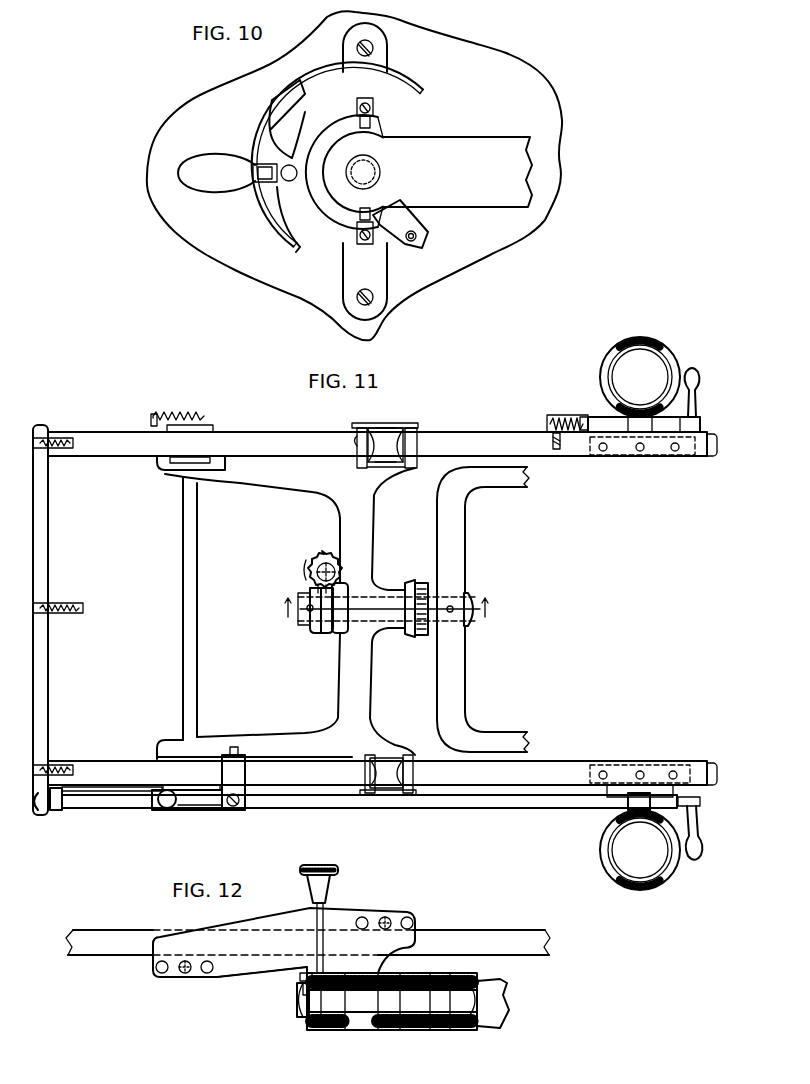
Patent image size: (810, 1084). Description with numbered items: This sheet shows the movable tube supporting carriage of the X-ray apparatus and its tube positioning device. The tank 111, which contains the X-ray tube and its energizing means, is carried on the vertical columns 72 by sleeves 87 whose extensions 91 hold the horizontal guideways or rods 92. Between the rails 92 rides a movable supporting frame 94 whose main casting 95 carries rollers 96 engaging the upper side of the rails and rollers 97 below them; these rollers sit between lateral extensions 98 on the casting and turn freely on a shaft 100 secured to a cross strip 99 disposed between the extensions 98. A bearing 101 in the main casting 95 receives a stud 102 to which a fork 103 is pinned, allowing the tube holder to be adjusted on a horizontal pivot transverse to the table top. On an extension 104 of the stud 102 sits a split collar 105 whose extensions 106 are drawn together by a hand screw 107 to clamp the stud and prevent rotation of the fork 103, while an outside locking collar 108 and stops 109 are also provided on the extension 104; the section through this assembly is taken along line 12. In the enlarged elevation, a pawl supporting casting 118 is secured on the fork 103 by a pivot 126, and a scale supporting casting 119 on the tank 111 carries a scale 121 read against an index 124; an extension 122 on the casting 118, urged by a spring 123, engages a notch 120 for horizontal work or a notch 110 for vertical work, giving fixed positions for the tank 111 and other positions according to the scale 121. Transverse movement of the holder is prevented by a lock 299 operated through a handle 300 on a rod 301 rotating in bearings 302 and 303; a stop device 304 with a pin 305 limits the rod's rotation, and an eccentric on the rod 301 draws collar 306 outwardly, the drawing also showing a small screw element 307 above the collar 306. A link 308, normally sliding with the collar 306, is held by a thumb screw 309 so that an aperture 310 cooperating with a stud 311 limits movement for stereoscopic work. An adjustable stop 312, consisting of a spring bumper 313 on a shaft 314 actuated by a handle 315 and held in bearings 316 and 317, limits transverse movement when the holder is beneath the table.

In FIG. 11, the section line 12 is at (389, 609).
In FIG. 11, the vertical columns 72 is at (660, 352).
In FIG. 11, the sleeves 87 is at (613, 345).
In FIG. 11, the extensions 91 is at (682, 449).
In FIG. 11, the guideways or rods 92 is at (238, 440).
In FIG. 12, the guideways or rods 92 is at (512, 943).
In FIG. 11, the movable supporting frame 94 is at (183, 544).
In FIG. 12, the movable supporting frame 94 is at (348, 915).
In FIG. 11, the main casting 95 is at (377, 542).
In FIG. 12, the main casting 95 is at (237, 973).
In FIG. 11, the rollers 96 is at (380, 433).
In FIG. 12, the rollers 96 is at (385, 910).
In FIG. 11, the rollers 97 is at (168, 466).
In FIG. 12, the rollers 97 is at (183, 978).
In FIG. 11, the lateral extensions 98 is at (153, 430).
In FIG. 11, the cross strip 99 is at (197, 426).
In FIG. 11, the shaft 100 is at (183, 461).
In FIG. 11, the bearing 101 is at (342, 630).
In FIG. 11, the stud 102 is at (390, 620).
In FIG. 12, the stud 102 is at (427, 1005).
In FIG. 10, the fork 103 is at (477, 150).
In FIG. 11, the fork 103 is at (458, 672).
In FIG. 12, the fork 103 is at (489, 1003).
In FIG. 11, the extension 104 is at (304, 609).
In FIG. 12, the extension 104 is at (300, 1007).
In FIG. 11, the split collar 105 is at (320, 630).
In FIG. 12, the split collar 105 is at (317, 1028).
In FIG. 11, the extensions 106 is at (322, 552).
In FIG. 11, the hand screw 107 is at (313, 558).
In FIG. 12, the hand screw 107 is at (319, 919).
In FIG. 11, the outside locking collar 108 is at (307, 603).
In FIG. 12, the outside locking collar 108 is at (303, 988).
In FIG. 11, the stops 109 is at (306, 564).
In FIG. 12, the stops 109 is at (303, 977).
In FIG. 10, the notch 110 is at (372, 72).
In FIG. 10, the tank 111 is at (540, 170).
In FIG. 10, the pawl supporting casting 118 is at (300, 192).
In FIG. 10, the scale supporting casting 119 is at (323, 82).
In FIG. 10, the notch 120 is at (260, 163).
In FIG. 10, the scale 121 is at (402, 76).
In FIG. 10, the extension 122 is at (270, 108).
In FIG. 10, the spring 123 is at (418, 243).
In FIG. 10, the index 124 is at (283, 97).
In FIG. 10, the pivot 126 is at (374, 104).
In FIG. 11, the lock 299 is at (237, 803).
In FIG. 11, the handle 300 is at (700, 822).
In FIG. 11, the rod 301 is at (550, 806).
In FIG. 11, the bearing 302 is at (647, 790).
In FIG. 11, the bearing 303 is at (34, 814).
In FIG. 11, the stop device 304 is at (56, 811).
In FIG. 11, the pin 305 is at (75, 787).
In FIG. 11, the collar 306 is at (247, 775).
In FIG. 11, the screw 307 is at (233, 747).
In FIG. 11, the link 308 is at (192, 810).
In FIG. 11, the thumb screw 309 is at (165, 808).
In FIG. 11, the aperture 310 is at (207, 808).
In FIG. 11, the stud 311 is at (233, 808).
In FIG. 11, the adjustable stop 312 is at (694, 400).
In FIG. 11, the spring bumper 313 is at (550, 416).
In FIG. 11, the shaft 314 is at (587, 417).
In FIG. 11, the handle 315 is at (700, 424).
In FIG. 11, the bearing 316 is at (597, 417).
In FIG. 11, the bearing 317 is at (548, 429).